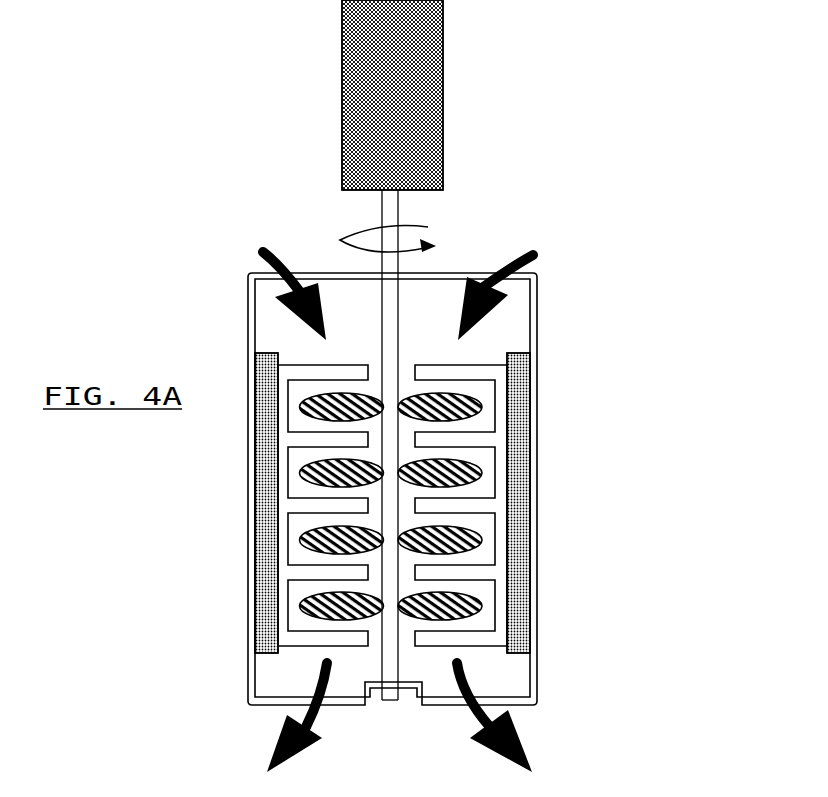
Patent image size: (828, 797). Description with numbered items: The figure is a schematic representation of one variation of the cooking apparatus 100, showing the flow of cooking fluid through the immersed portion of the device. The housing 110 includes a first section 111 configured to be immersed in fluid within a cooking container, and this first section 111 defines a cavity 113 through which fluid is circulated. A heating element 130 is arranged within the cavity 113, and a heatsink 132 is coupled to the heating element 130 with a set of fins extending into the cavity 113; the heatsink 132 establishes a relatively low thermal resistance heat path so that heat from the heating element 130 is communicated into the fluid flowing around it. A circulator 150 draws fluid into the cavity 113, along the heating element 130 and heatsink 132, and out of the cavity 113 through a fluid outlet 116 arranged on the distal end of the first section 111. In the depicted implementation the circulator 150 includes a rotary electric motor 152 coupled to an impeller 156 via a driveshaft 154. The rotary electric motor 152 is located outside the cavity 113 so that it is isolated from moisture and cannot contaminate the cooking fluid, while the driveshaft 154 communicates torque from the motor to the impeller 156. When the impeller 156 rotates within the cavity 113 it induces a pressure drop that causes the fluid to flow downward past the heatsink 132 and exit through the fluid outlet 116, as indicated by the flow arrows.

The apparatus 100 is at (240, 66).
The housing 110 is at (538, 303).
The first section 111 is at (552, 337).
The cavity 113 is at (520, 676).
The fluid outlet 116 is at (285, 682).
The heating element 130 is at (517, 478).
The heatsink 132 is at (492, 438).
The circulator 150 is at (470, 120).
The rotary electric motor 152 is at (427, 45).
The driveshaft 154 is at (392, 208).
The impeller 156 is at (460, 407).